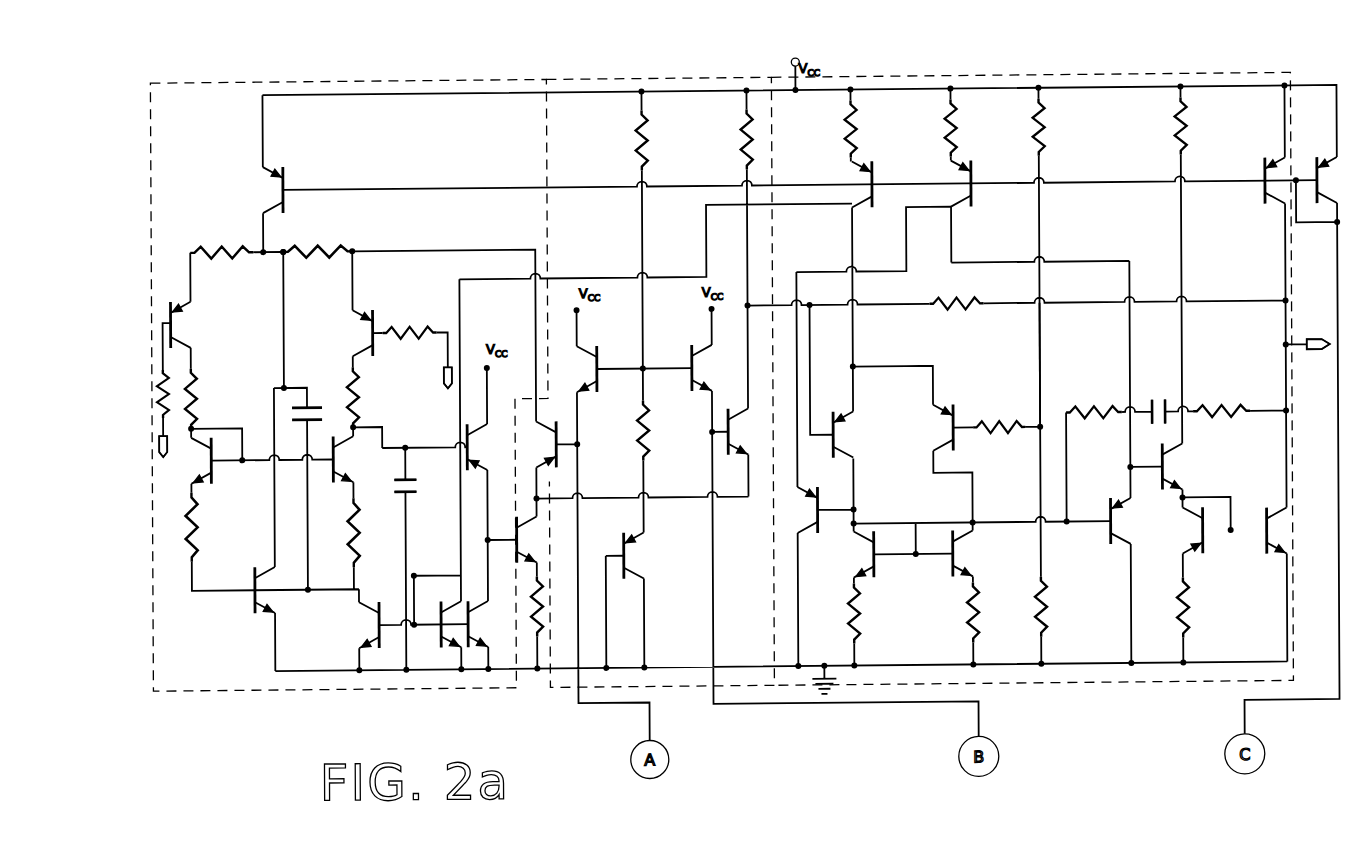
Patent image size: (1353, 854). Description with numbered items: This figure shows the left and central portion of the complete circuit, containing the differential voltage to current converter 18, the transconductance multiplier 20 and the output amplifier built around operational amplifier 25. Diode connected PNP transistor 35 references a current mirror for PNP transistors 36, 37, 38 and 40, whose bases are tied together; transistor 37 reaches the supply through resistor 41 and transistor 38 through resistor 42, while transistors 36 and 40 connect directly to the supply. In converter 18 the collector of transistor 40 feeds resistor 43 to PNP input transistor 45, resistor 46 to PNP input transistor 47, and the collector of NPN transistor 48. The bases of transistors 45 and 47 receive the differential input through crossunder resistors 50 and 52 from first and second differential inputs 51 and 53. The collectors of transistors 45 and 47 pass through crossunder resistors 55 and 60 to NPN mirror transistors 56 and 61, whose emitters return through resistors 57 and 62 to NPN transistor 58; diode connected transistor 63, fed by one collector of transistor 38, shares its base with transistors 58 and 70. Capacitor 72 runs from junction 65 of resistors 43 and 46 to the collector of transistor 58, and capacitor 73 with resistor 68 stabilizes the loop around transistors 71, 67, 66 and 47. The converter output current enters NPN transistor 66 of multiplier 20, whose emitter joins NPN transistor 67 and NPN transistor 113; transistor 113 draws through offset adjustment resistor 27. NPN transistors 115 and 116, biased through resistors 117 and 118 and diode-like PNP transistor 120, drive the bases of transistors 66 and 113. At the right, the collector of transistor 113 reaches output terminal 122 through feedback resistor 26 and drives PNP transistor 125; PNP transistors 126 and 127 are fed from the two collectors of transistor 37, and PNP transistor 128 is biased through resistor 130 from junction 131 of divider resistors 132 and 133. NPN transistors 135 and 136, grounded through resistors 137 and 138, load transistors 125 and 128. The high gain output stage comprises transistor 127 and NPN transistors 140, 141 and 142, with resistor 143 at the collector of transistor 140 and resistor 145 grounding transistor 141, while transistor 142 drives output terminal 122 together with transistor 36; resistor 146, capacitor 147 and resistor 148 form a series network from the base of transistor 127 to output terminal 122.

The differential voltage to current converter 18 is at (352, 696).
The transconductance multiplier 20 is at (679, 693).
The operational amplifier 25 is at (1067, 322).
The feedback or output resistor 26 is at (958, 312).
The offset adjustment resistor 27 is at (740, 138).
The PNP transistor 35 is at (1314, 168).
The PNP transistor 36 is at (1264, 194).
The PNP transistor 37 is at (971, 158).
The PNP transistor 38 is at (875, 193).
The PNP transistor 40 is at (287, 177).
The resistor 41 is at (940, 126).
The resistor 42 is at (850, 141).
The resistor 43 is at (226, 238).
The PNP input transistor 45 is at (182, 296).
The resistor 46 is at (337, 247).
The PNP input transistor 47 is at (376, 312).
The NPN transistor 48 is at (256, 594).
The crossunder resistor 50 is at (168, 362).
The first differential input 51 is at (170, 452).
The crossunder resistor 52 is at (407, 330).
The second differential input 53 is at (443, 383).
The crossunder resistor 55 is at (200, 395).
The NPN mirror transistor 56 is at (214, 466).
The resistor 57 is at (188, 545).
The NPN transistor 58 is at (372, 615).
The crossunder resistor 60 is at (352, 395).
The NPN mirror transistor 61 is at (337, 463).
The resistor 62 is at (358, 528).
The NPN transistor 63 is at (448, 605).
The junction 65 is at (284, 252).
The NPN transistor 66 is at (553, 436).
The NPN transistor 67 is at (522, 548).
The resistor 68 is at (538, 620).
The NPN transistor 70 is at (470, 615).
The NPN transistor 71 is at (475, 460).
The capacitor 72 is at (318, 400).
The capacitor 73 is at (412, 476).
The NPN transistor 113 is at (726, 438).
The NPN transistor 115 is at (600, 352).
The NPN transistor 116 is at (690, 352).
The resistor 117 is at (650, 145).
The resistor 118 is at (643, 440).
The PNP transistor 120 is at (627, 560).
The output terminal 122 is at (1310, 358).
The PNP transistor 125 is at (838, 432).
The PNP transistor 126 is at (826, 520).
The PNP transistor 127 is at (1105, 527).
The PNP transistor 128 is at (940, 415).
The resistor 130 is at (1003, 425).
The junction 131 is at (1050, 404).
The resistor 132 is at (1047, 122).
The resistor 133 is at (1050, 598).
The NPN transistor 135 is at (882, 565).
The NPN transistor 136 is at (960, 550).
The resistor 137 is at (848, 605).
The resistor 138 is at (965, 618).
The NPN transistor 140 is at (1170, 468).
The NPN transistor 141 is at (1195, 514).
The NPN transistor 142 is at (1258, 554).
The resistor 143 is at (1186, 130).
The resistor 145 is at (1195, 600).
The resistor 146 is at (1100, 422).
The capacitor 147 is at (1152, 402).
The resistor 148 is at (1225, 410).